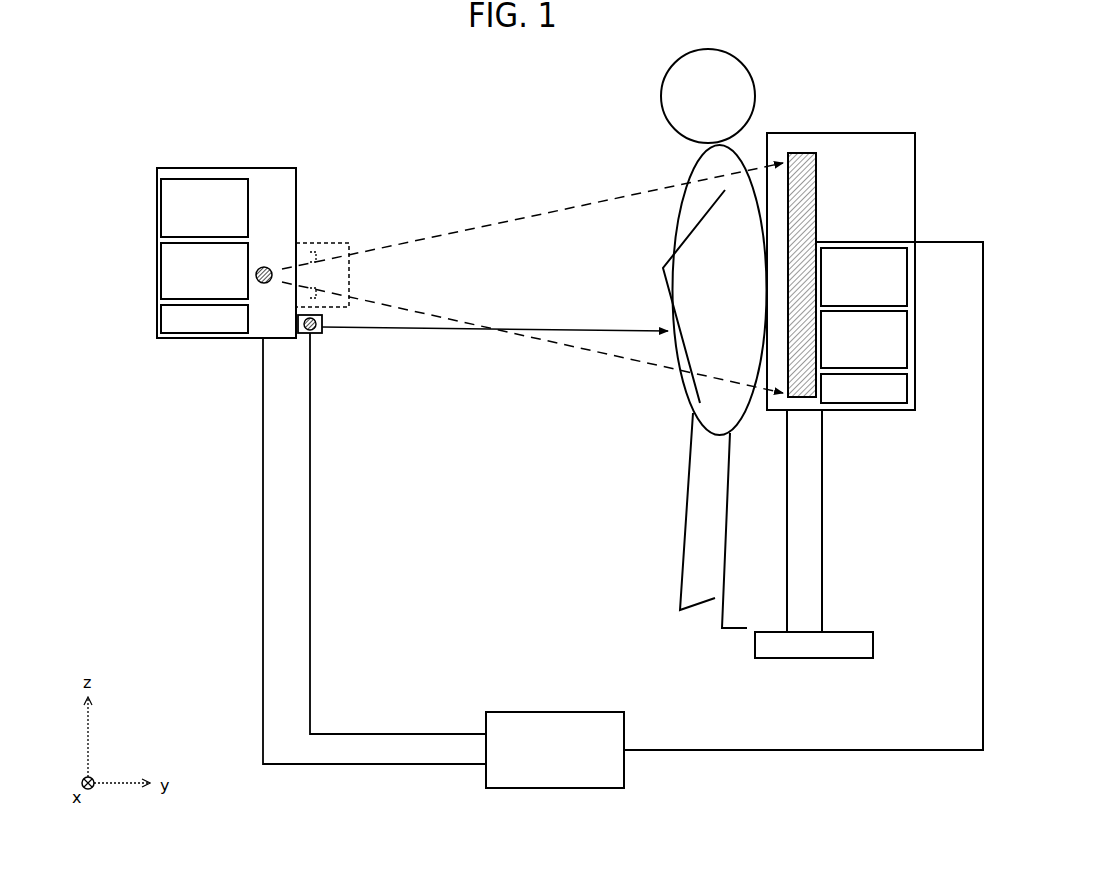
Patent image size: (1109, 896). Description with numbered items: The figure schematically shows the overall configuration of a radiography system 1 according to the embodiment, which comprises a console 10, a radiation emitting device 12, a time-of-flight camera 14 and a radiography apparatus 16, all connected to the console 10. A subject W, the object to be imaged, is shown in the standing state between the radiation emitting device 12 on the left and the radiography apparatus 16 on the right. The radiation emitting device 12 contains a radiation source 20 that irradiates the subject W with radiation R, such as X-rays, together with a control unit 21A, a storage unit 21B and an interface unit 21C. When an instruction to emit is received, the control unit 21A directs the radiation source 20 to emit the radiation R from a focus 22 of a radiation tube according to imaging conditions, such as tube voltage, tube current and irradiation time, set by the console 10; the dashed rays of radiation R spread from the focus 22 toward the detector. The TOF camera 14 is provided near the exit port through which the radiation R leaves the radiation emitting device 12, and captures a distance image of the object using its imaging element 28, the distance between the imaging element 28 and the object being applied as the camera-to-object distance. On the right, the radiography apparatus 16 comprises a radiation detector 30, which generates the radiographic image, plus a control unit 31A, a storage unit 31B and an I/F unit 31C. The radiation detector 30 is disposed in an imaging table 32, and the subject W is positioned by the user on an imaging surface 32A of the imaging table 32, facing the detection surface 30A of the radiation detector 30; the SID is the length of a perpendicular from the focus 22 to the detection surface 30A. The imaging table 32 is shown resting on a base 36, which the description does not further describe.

The radiography system 1 is at (886, 77).
The console 10 is at (562, 712).
The radiation emitting device 12 is at (265, 156).
The time-of-flight (TOF) camera 14 is at (313, 334).
The radiography apparatus 16 is at (848, 163).
The radiation source 20 is at (285, 192).
The control unit 21A is at (161, 222).
The storage unit 21B is at (161, 272).
The interface (I/F) unit 21C is at (161, 318).
The focus 22 is at (328, 241).
The imaging element 28 is at (305, 334).
The radiation detector 30 is at (807, 218).
The detection surface 30A is at (784, 366).
The control unit 31A is at (907, 280).
The storage unit 31B is at (907, 325).
The I/F unit 31C is at (907, 385).
The imaging table 32 is at (907, 150).
The imaging surface 32A is at (768, 142).
The stand 36 is at (848, 633).
The subject W is at (661, 101).
The radiation R is at (532, 278).